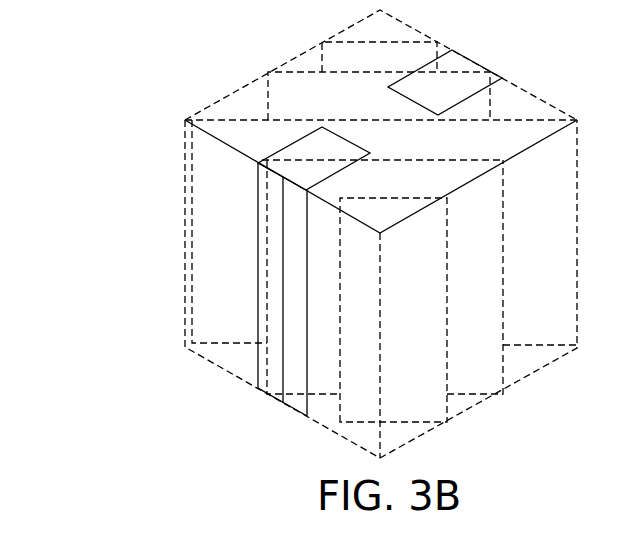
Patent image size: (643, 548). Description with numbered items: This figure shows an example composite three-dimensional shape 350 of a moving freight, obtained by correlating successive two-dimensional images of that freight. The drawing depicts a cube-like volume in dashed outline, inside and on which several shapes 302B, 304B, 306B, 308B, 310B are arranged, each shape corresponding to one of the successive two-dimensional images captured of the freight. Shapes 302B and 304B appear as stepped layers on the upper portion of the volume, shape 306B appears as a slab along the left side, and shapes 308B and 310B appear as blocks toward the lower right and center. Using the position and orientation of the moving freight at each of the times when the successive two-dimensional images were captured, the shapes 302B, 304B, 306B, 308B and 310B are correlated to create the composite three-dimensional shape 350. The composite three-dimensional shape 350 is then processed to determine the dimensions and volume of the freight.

The composite three-dimensional shape 350 is at (105, 80).
The shape 302B is at (367, 57).
The shape 304B is at (310, 83).
The shape 306B is at (257, 137).
The shape 308B is at (468, 382).
The shape 310B is at (397, 395).